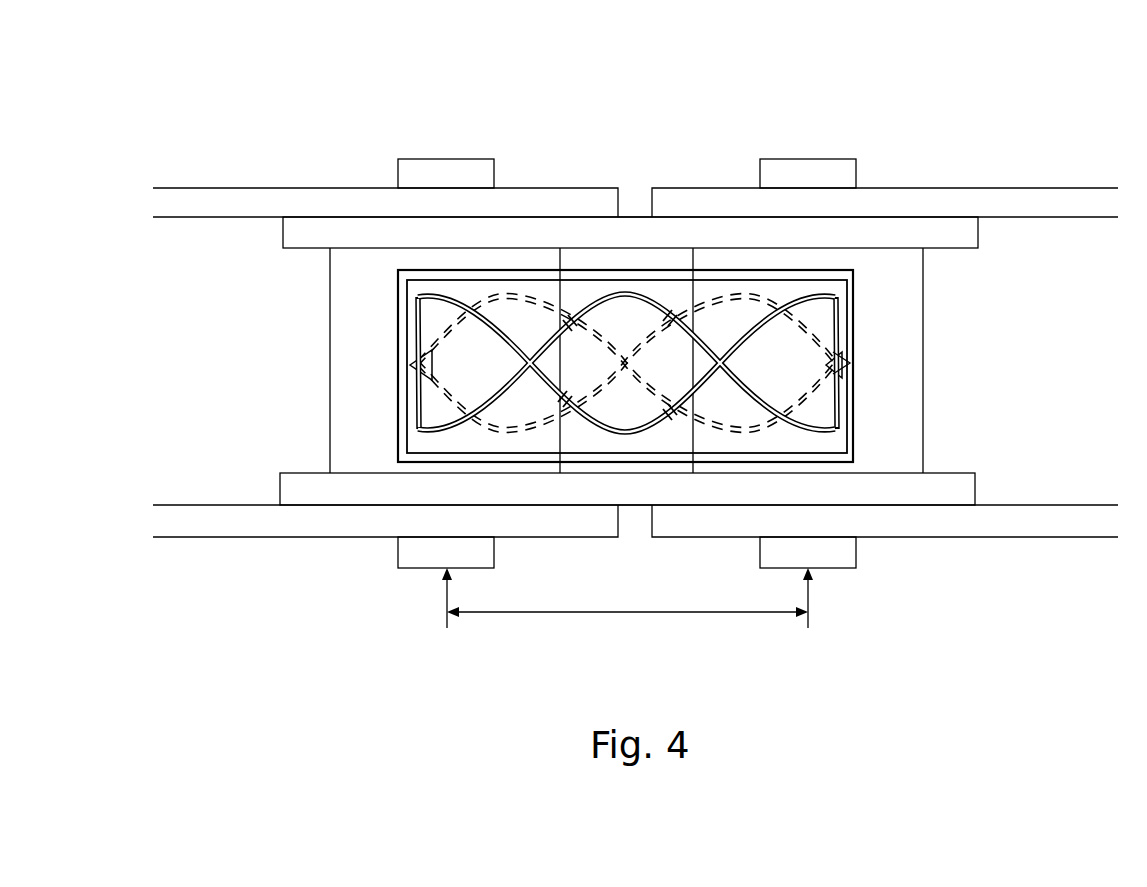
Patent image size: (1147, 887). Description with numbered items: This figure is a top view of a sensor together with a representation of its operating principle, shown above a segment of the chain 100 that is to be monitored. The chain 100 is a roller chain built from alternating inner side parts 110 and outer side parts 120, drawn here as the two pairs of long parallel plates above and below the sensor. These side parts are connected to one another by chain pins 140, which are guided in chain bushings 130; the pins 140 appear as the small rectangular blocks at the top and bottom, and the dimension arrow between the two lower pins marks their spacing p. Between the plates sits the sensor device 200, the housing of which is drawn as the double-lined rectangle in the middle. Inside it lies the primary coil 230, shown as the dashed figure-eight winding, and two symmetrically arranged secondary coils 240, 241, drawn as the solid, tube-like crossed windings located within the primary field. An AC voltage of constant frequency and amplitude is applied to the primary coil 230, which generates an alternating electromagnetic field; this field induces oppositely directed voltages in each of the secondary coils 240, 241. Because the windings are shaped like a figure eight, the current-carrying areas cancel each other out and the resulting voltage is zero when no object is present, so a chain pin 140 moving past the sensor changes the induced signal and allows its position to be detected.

The chain 100 is at (535, 113).
The inner side parts 110 is at (305, 240).
The outer side parts 120 is at (226, 200).
The chain bushings 130 is at (923, 277).
The chain pins 140 is at (447, 170).
The sensor device 200 is at (640, 255).
The primary coil 230 is at (397, 368).
The secondary coil 240 is at (397, 327).
The secondary coil 241 is at (853, 345).